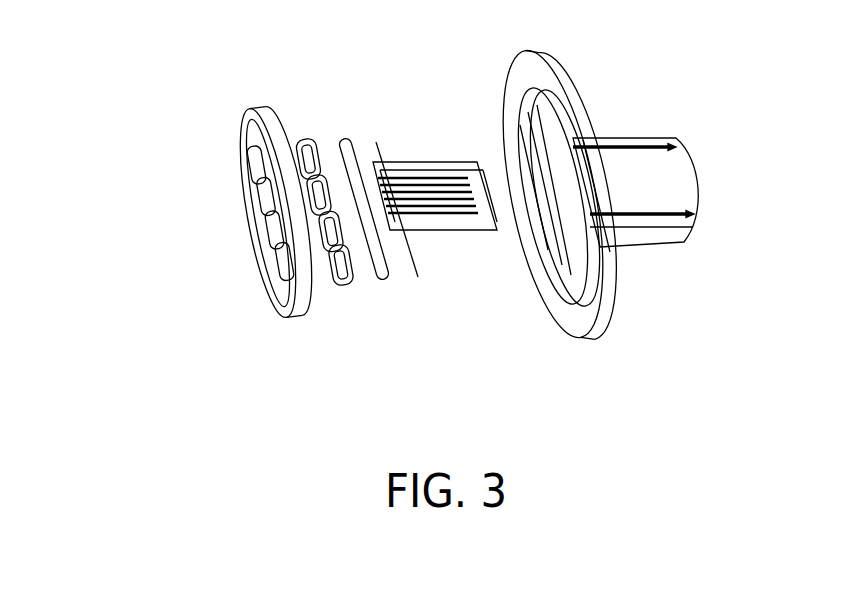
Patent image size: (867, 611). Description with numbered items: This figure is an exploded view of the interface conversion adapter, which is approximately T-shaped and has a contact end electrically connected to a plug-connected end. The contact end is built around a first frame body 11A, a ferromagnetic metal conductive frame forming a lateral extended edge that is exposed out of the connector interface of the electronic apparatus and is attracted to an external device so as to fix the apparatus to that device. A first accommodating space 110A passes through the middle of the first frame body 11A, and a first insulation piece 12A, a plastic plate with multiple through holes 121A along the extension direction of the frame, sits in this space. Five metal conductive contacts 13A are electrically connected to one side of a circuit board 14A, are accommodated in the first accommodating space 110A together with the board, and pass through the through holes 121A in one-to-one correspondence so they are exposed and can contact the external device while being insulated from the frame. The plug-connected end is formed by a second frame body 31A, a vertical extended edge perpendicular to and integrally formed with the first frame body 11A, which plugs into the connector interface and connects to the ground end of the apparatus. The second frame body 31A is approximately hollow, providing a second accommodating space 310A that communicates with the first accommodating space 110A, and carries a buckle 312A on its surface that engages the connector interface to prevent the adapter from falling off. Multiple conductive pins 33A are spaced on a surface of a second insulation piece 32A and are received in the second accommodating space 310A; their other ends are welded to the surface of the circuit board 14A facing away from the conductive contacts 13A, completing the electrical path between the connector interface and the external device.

The first frame body 11A is at (575, 262).
The first accommodating space 110A is at (517, 150).
The second accommodating space 310A is at (543, 192).
The second frame body 31A is at (662, 180).
The buckle 312A is at (677, 212).
The second insulation piece 32A is at (420, 163).
The conductive pins 33A is at (460, 208).
The circuit board 14A is at (372, 258).
The conductive contacts 13A is at (305, 143).
The first insulation piece 12A is at (295, 292).
The through holes 121A is at (250, 157).